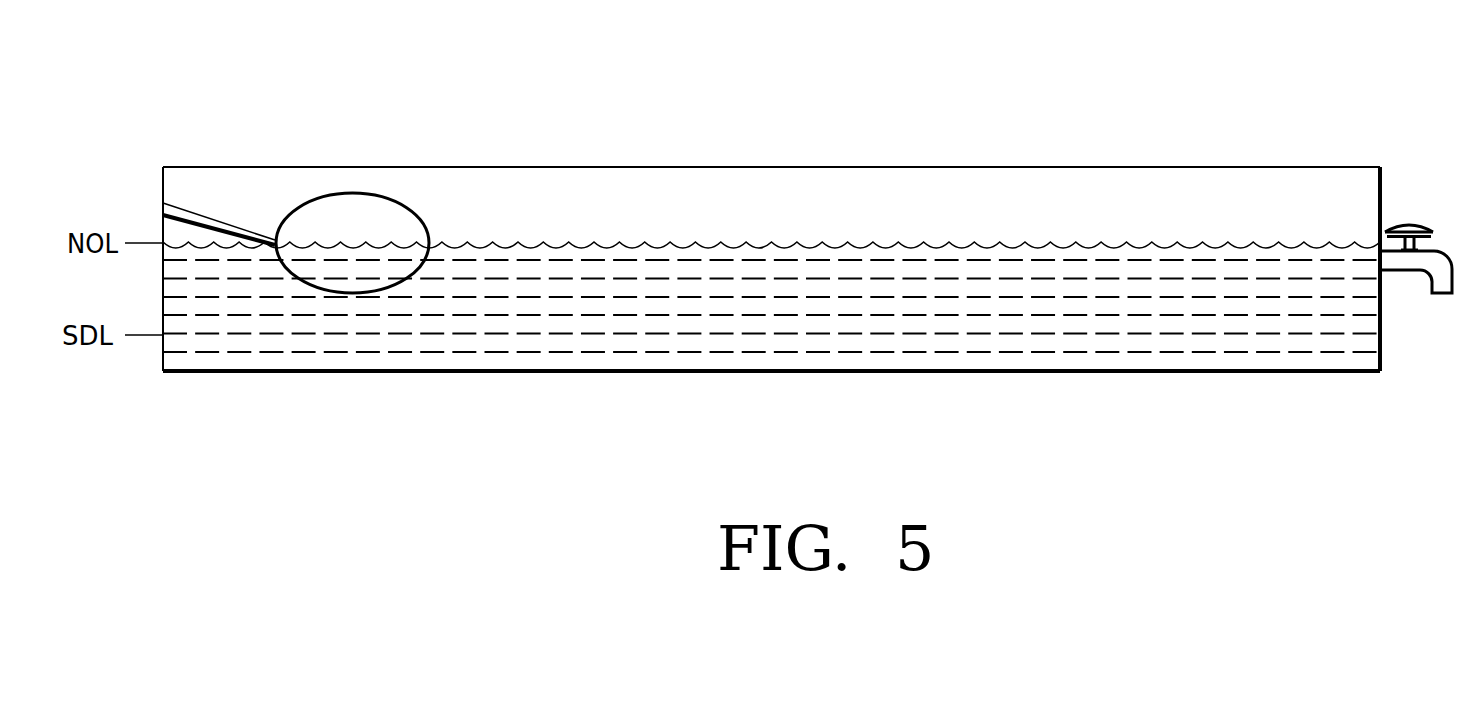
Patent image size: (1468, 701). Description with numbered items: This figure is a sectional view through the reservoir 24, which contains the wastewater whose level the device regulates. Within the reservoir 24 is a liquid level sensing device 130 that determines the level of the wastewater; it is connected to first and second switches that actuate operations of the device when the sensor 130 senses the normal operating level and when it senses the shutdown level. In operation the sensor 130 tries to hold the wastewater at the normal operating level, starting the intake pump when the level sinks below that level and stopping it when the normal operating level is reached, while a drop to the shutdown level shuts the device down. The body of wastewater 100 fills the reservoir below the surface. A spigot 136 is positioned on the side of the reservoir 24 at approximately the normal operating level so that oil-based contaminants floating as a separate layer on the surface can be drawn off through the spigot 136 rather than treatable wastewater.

The reservoir 24 is at (1215, 126).
The liquid 100 is at (566, 279).
The liquid level sensing device 130 is at (365, 196).
The spigot 136 is at (1406, 222).